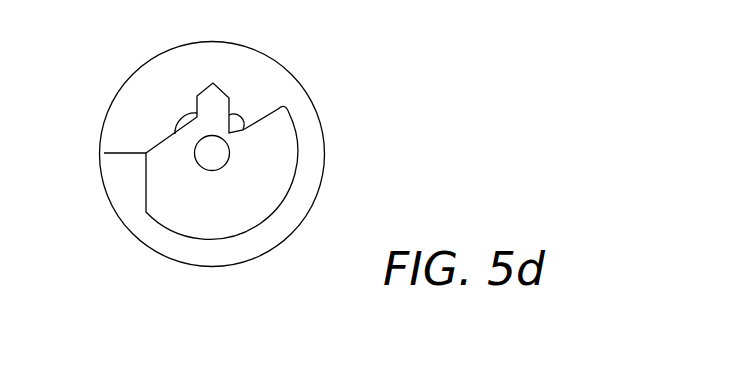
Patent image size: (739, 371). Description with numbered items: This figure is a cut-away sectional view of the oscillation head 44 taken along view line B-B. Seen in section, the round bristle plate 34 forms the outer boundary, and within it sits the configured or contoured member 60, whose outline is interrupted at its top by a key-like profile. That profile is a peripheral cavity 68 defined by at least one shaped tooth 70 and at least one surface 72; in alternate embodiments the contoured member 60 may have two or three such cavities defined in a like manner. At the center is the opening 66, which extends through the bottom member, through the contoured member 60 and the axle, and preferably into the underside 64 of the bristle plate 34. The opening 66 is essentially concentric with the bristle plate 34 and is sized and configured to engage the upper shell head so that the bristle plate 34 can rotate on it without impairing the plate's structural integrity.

The bristle plate 34 is at (323, 134).
The oscillation head 44 is at (414, 93).
The configured member 60 is at (240, 213).
The underside 64 is at (137, 218).
The opening 66 is at (212, 153).
The peripheral cavity 68 is at (247, 107).
The shaped tooth 70 is at (214, 96).
The surface 72 is at (266, 110).